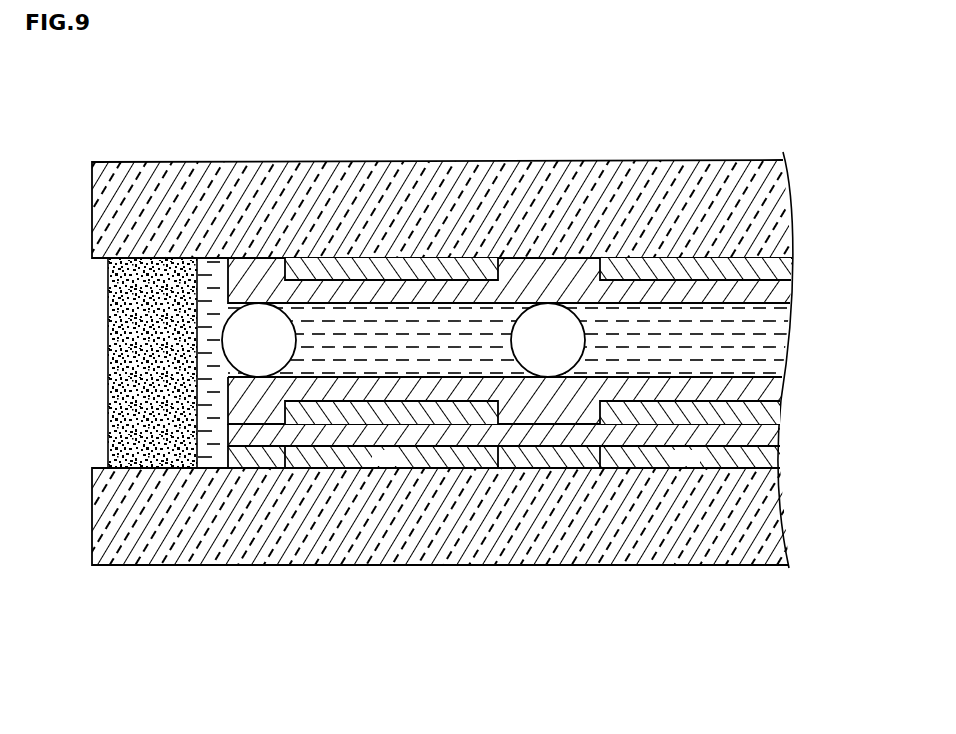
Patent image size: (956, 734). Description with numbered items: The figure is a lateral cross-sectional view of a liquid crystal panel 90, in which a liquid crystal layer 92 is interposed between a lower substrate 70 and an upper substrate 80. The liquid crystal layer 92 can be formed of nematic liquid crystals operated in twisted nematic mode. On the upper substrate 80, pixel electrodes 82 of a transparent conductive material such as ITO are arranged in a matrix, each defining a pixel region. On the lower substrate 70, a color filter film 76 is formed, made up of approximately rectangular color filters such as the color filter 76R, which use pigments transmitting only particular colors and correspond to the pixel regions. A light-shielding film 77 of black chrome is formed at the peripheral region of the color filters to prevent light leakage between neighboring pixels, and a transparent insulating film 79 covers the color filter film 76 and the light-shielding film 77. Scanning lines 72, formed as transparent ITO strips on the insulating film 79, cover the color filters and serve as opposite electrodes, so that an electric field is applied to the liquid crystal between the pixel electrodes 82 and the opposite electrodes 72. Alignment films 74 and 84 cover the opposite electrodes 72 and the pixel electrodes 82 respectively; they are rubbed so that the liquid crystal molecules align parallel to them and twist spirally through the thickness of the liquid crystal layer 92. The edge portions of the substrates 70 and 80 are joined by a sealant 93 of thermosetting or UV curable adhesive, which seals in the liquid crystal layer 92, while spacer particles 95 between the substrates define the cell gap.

The lower substrate 70 is at (768, 528).
The scanning lines 72 is at (781, 410).
The alignment film 74 is at (781, 388).
The color filter film 76 is at (808, 463).
The color filter 76R is at (640, 468).
The light-shielding film 77 is at (535, 468).
The transparent insulating film 79 is at (781, 437).
The upper substrate 80 is at (793, 218).
The pixel electrodes 82 is at (789, 265).
The alignment film 84 is at (787, 296).
The liquid crystal panel 90 is at (132, 118).
The liquid crystal layer 92 is at (783, 340).
The sealant 93 is at (108, 313).
The spacer particles 95 is at (583, 326).